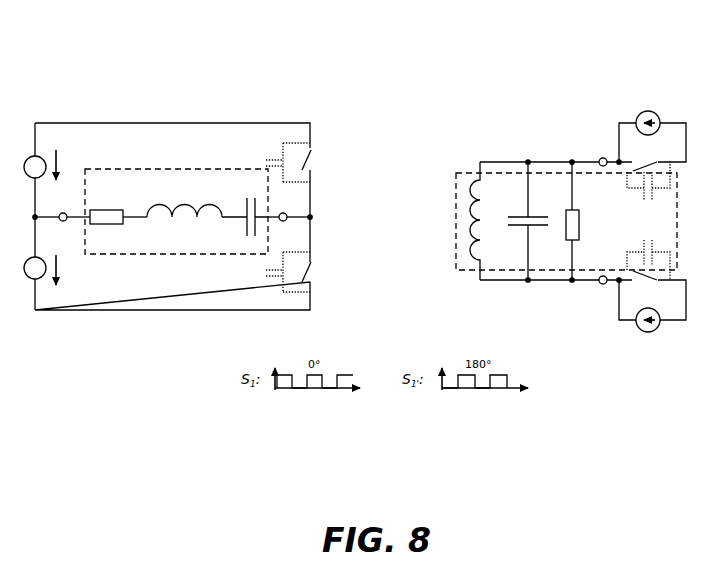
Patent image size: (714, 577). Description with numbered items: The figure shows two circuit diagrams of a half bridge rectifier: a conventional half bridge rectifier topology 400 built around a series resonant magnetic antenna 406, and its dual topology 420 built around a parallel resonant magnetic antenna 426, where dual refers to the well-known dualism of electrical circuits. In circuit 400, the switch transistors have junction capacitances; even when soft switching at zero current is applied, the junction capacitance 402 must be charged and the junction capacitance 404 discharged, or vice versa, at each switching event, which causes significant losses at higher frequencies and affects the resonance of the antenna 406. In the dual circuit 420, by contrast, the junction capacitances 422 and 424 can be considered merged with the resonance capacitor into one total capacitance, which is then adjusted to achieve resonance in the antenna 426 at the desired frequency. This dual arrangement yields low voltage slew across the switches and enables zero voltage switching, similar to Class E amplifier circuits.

The half bridge rectifier topology 400 is at (174, 78).
The junction capacitance C_j 402 is at (268, 163).
The junction capacitance C_j' 404 is at (268, 270).
The antenna 406 is at (156, 168).
The dual topology 420 is at (579, 88).
The junction capacitance C_j 422 is at (643, 192).
The junction capacitance C_j' 424 is at (643, 252).
The antenna 426 is at (470, 173).